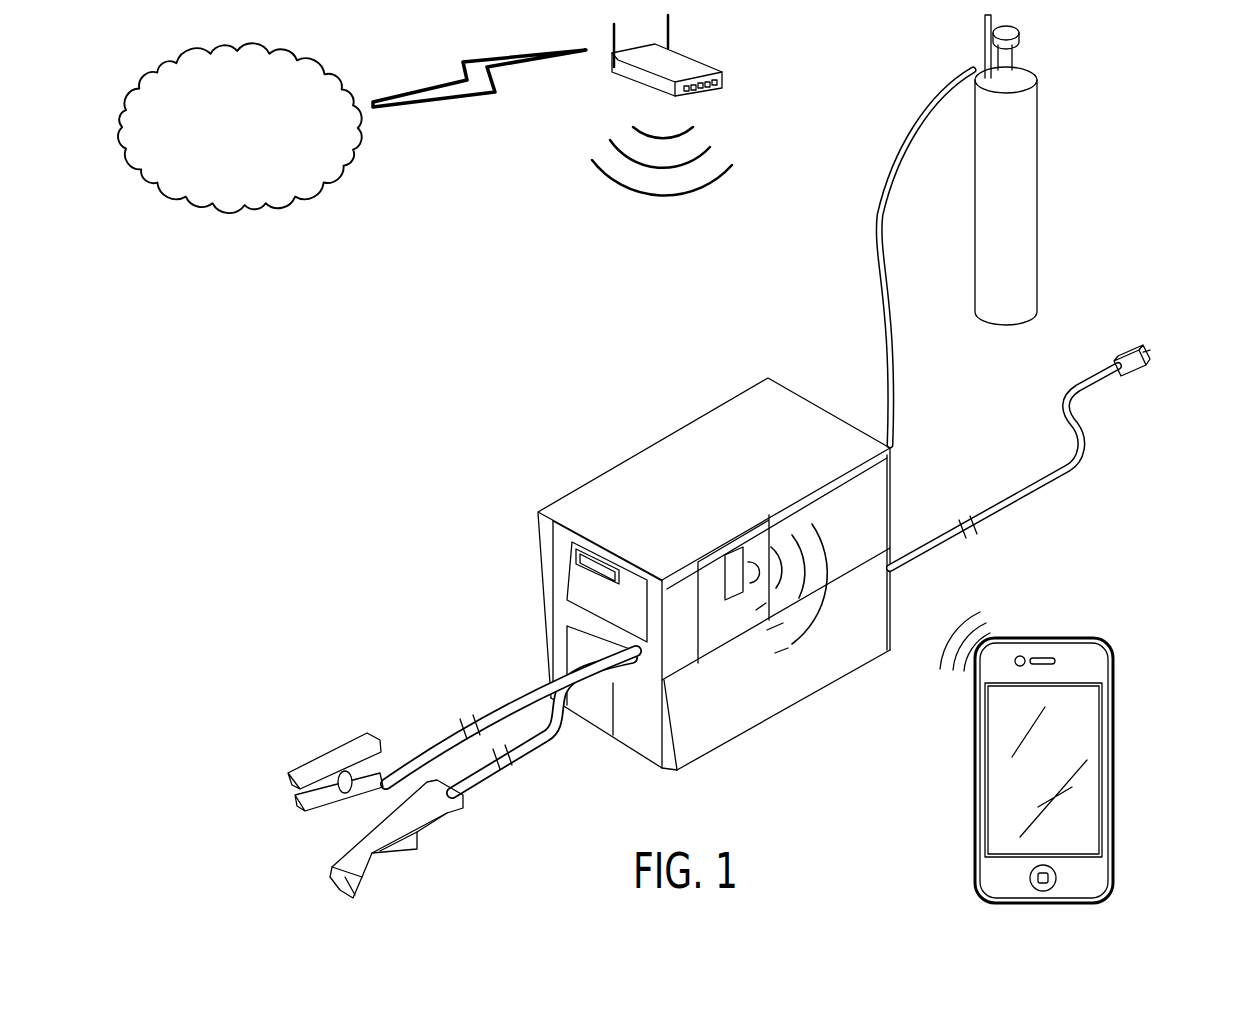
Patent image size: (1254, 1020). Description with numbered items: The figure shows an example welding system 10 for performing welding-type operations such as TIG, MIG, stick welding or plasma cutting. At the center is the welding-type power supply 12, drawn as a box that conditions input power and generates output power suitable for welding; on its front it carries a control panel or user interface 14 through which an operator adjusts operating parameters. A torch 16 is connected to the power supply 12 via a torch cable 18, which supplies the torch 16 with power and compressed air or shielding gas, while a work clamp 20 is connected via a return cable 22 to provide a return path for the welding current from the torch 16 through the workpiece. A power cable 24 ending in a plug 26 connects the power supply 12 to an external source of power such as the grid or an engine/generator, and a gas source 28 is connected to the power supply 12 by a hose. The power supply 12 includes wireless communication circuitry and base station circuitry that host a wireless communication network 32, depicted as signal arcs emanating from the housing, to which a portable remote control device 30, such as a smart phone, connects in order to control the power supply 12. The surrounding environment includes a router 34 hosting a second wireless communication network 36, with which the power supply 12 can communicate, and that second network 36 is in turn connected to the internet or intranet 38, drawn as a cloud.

The welding system 10 is at (668, 580).
The welding-type power supply 12 is at (676, 580).
The user interface 14 is at (572, 560).
The torch 16 is at (302, 866).
The torch cable 18 is at (575, 730).
The work clamp 20 is at (325, 755).
The return cable 22 is at (420, 745).
The power cable 24 is at (1020, 500).
The plug 26 is at (1135, 378).
The gas source 28 is at (1040, 190).
The remote control device 30 is at (1105, 640).
The wireless communication network 32 is at (792, 644).
The router 34 is at (688, 58).
The second wireless communication network 36 is at (592, 160).
The internet or intranet 38 is at (248, 211).